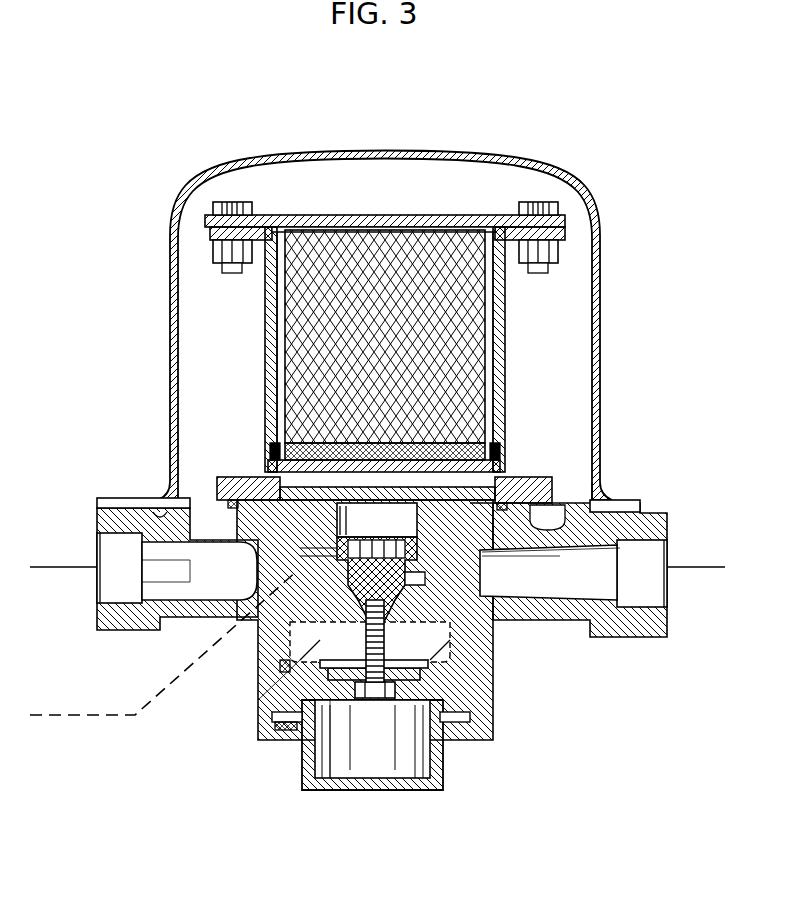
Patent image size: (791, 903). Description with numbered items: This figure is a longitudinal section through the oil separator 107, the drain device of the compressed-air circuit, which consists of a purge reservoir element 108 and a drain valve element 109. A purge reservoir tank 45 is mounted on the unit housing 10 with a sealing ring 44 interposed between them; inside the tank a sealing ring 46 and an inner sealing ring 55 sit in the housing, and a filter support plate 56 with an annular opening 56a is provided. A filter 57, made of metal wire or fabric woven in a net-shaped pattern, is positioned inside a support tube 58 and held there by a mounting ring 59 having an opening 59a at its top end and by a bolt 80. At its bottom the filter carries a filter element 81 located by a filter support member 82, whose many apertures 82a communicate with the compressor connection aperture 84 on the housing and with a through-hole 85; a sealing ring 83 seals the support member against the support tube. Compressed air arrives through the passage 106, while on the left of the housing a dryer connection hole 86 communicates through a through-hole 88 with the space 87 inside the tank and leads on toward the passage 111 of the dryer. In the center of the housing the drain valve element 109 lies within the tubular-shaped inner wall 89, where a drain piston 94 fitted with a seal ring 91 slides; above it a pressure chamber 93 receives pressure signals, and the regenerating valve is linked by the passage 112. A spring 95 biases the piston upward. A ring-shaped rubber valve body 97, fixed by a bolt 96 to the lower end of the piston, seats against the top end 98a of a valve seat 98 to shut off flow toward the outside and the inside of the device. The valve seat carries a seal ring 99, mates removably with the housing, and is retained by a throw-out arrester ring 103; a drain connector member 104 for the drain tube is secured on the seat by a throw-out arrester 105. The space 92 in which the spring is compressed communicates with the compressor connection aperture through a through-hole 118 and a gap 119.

The unit housing 10 is at (635, 632).
The sealing ring 44 is at (608, 508).
The purge reservoir tank 45 is at (593, 262).
The sealing ring 46 is at (596, 492).
The inner sealing ring 55 is at (336, 509).
The filter support plate 56 is at (530, 482).
The annular opening 56a is at (522, 548).
The filter 57 is at (374, 240).
The support tube 58 is at (506, 340).
The mounting ring 59 is at (480, 215).
The opening 59a is at (300, 215).
The bolt 80 is at (236, 204).
The filter element 81 is at (271, 447).
The filter support member 82 is at (268, 468).
The apertures 82a is at (358, 432).
The sealing ring 83 is at (490, 466).
The compressor connection aperture 84 is at (668, 590).
The through-hole 85 is at (510, 562).
The dryer connection hole 86 is at (97, 585).
The space 87 is at (236, 337).
The through-hole 88 is at (150, 497).
The tubular-shaped inner wall 89 is at (275, 650).
The seal ring 91 is at (262, 556).
The space 92 is at (440, 575).
The pressure chamber 93 is at (352, 530).
The drain piston 94 is at (265, 579).
The spring 95 is at (456, 592).
The bolt 96 is at (375, 700).
The ring-shaped rubber valve body 97 is at (452, 685).
The valve seat 98 is at (452, 712).
The top end 98a is at (470, 668).
The seal ring 99 is at (284, 680).
The throw-out arrester ring 103 is at (272, 728).
The drain connector member 104 is at (414, 762).
The throw-out arrester 105 is at (300, 716).
The passage 106 is at (715, 566).
The oil separator 107 is at (604, 168).
The purge reservoir element 108 is at (602, 351).
The drain valve element 109 is at (330, 768).
The passage 111 is at (58, 566).
The passage 112 is at (164, 642).
The through-hole 118 is at (482, 650).
The gap 119 is at (482, 634).